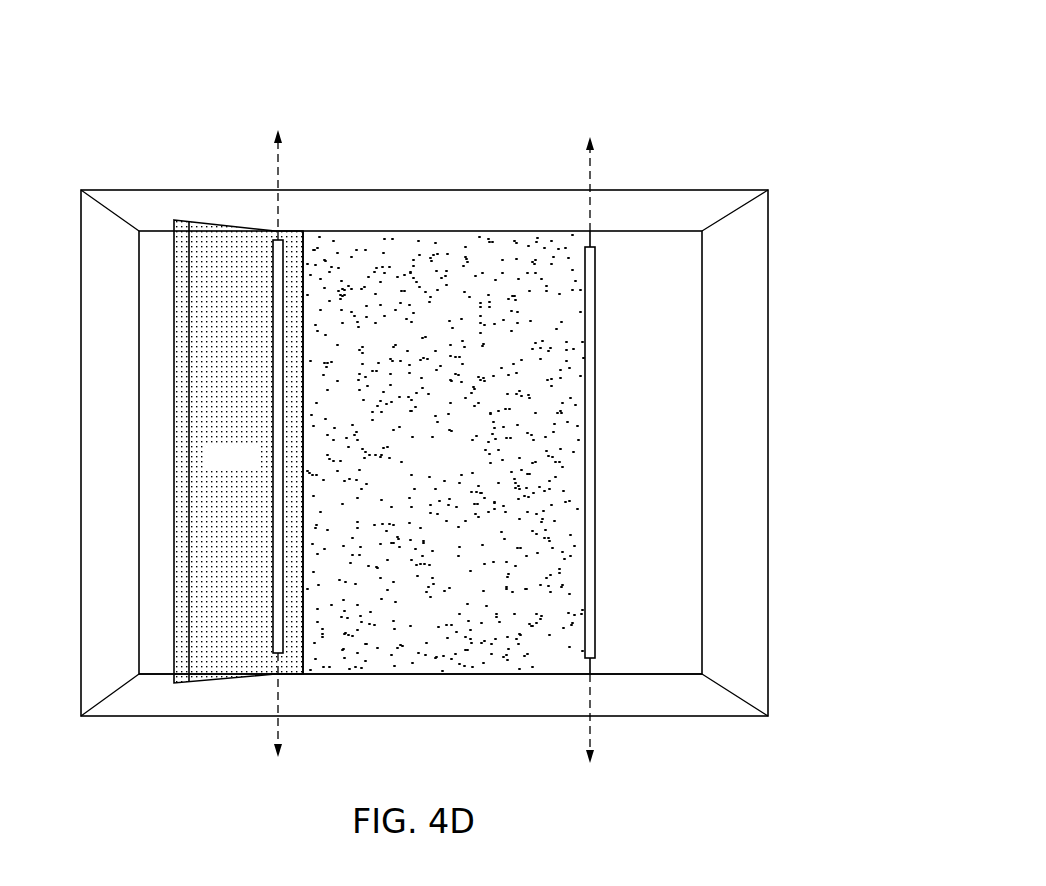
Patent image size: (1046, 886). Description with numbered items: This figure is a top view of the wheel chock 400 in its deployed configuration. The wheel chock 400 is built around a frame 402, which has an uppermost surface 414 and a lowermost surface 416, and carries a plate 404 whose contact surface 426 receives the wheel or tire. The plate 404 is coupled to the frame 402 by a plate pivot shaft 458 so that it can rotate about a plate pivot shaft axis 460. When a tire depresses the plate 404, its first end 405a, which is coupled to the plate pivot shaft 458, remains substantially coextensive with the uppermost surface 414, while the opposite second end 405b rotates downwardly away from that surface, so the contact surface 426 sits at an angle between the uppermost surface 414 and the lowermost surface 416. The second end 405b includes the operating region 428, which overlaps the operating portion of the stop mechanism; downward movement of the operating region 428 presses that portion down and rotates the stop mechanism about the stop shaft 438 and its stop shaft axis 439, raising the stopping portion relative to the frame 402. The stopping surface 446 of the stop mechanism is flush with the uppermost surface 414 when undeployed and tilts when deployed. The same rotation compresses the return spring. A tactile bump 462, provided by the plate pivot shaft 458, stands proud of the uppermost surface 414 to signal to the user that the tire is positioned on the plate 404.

The wheel chock 400 is at (216, 50).
The frame 402 is at (617, 202).
The plate 404 is at (470, 257).
The first end of the plate 405a is at (537, 648).
The second end of the plate 405b is at (320, 655).
The uppermost surface 414 is at (643, 231).
The lowermost surface 416 is at (710, 190).
The contact surface 426 is at (455, 467).
The operating region 428 is at (325, 580).
The stop shaft 438 is at (278, 258).
The stop shaft axis 439 is at (278, 727).
The stopping surface 446 is at (253, 467).
The plate pivot shaft 458 is at (590, 633).
The plate pivot shaft axis 460 is at (588, 157).
The tactile bump 462 is at (595, 453).